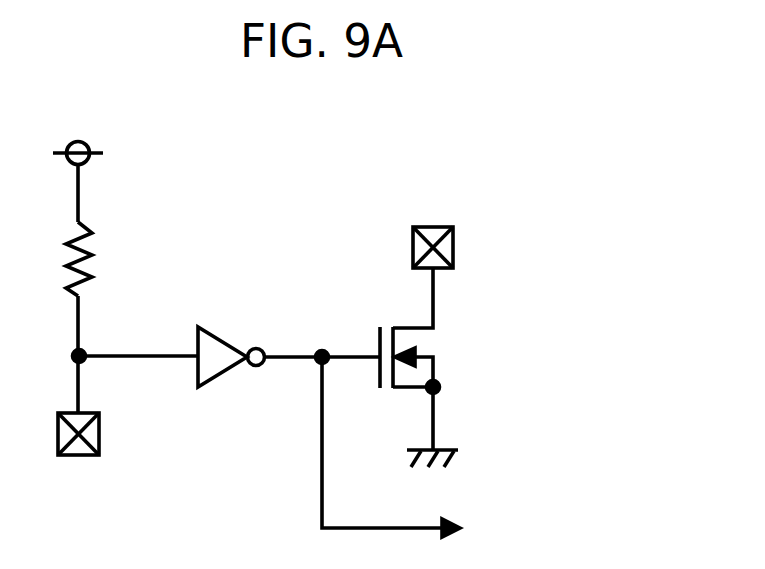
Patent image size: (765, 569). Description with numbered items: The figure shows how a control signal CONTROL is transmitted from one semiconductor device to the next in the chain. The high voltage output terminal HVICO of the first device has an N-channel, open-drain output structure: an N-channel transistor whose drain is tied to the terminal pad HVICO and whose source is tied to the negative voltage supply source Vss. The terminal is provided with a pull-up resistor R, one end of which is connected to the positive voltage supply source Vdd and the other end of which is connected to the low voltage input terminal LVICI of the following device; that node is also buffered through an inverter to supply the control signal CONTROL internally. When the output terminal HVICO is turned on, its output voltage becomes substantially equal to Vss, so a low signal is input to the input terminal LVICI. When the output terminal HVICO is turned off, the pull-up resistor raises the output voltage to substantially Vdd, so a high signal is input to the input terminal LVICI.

The positive voltage supply source Vdd is at (78, 165).
The low voltage input terminal LVICI is at (127, 452).
The high voltage output terminal HVICO is at (513, 247).
The negative voltage supply source Vss is at (458, 454).
The control signal CONTROL is at (456, 456).